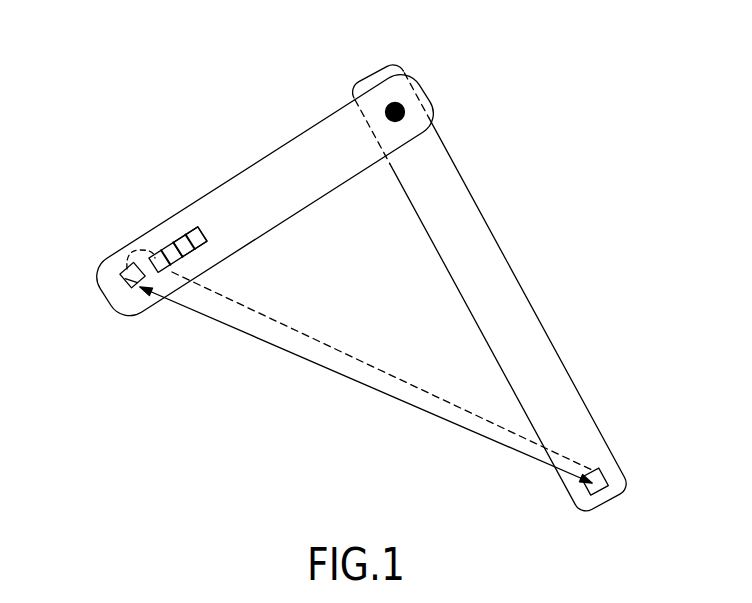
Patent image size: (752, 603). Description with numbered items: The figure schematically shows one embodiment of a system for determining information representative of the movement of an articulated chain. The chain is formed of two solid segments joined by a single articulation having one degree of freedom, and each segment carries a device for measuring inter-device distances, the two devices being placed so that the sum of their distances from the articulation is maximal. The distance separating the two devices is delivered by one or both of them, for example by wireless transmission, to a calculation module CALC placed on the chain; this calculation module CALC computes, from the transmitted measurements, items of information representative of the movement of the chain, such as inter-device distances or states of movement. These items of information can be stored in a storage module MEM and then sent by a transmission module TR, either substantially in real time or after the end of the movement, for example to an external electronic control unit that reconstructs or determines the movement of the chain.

The storage module MEM is at (160, 251).
The transmission module TR is at (188, 236).
The calculation module CALC is at (150, 246).